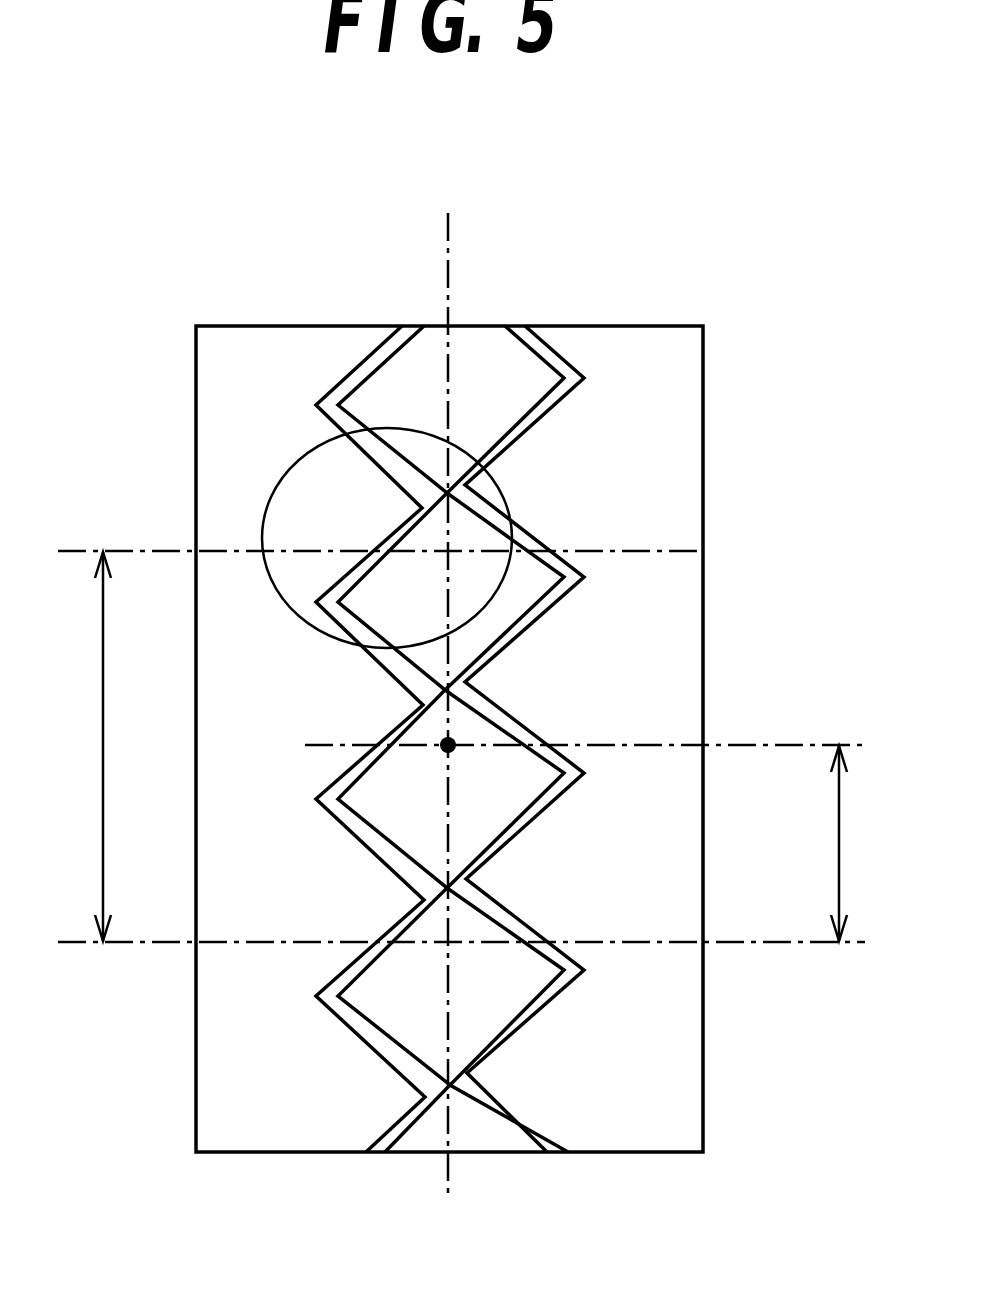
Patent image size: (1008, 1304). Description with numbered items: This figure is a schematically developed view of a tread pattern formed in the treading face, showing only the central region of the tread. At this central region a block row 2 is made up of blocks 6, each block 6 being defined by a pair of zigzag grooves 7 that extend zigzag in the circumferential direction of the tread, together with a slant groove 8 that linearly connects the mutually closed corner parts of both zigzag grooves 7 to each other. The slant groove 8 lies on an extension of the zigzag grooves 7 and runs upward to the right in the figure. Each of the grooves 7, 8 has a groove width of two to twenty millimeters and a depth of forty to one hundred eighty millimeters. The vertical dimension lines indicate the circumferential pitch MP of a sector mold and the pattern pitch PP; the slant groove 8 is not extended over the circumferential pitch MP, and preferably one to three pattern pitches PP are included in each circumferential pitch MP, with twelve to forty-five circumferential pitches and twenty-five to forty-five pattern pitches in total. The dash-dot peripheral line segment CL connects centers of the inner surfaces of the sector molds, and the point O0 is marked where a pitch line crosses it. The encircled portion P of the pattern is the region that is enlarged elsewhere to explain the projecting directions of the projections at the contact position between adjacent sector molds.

The block row 2 is at (468, 383).
The zigzag grooves 7 is at (577, 365).
The slant groove 8 is at (448, 505).
The block 6 is at (440, 838).
The portion P is at (264, 505).
The peripheral line segment CL is at (451, 732).
The origin point O0 is at (445, 746).
The circumferential pitch MP is at (448, 746).
The pattern pitch PP is at (596, 843).